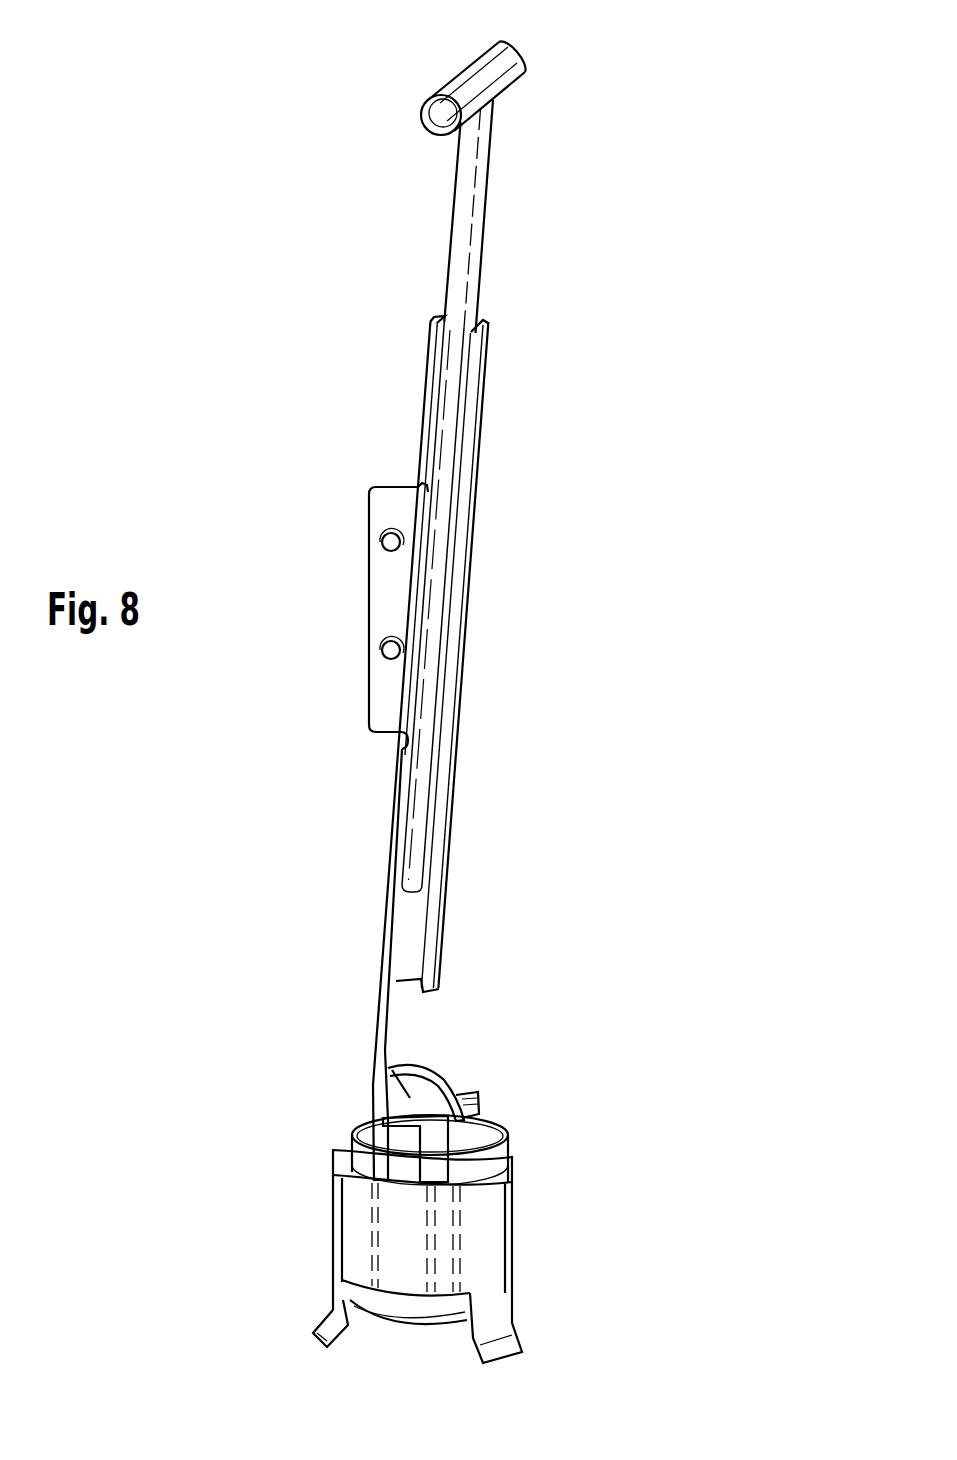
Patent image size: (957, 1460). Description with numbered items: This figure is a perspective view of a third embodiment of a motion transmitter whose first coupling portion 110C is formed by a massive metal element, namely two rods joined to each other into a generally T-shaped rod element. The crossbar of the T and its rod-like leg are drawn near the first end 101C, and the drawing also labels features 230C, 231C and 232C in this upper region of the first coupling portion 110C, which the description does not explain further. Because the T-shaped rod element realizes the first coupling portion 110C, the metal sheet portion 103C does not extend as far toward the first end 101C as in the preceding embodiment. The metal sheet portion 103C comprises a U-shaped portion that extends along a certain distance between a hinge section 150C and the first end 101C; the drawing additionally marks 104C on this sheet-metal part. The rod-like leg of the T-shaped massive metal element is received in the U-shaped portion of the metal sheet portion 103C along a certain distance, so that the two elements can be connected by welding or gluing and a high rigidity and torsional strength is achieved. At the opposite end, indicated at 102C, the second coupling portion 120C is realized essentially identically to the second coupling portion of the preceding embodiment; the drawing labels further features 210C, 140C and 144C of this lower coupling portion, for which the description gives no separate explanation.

The first end 101C is at (306, 66).
The first coupling portion 110C is at (663, 99).
The grip cylinder 230C is at (562, 38).
The grip end cap 231C is at (441, 116).
The shaft 232C is at (482, 213).
The metal sheet portion 103C is at (537, 617).
The guide channel 104C is at (473, 465).
The hinge section 150C is at (431, 1033).
The base unit 102C is at (270, 1304).
The clip 210C is at (492, 1114).
The second coupling portion 120C is at (573, 1160).
The holder 140C is at (513, 1228).
The feet 144C is at (476, 1353).